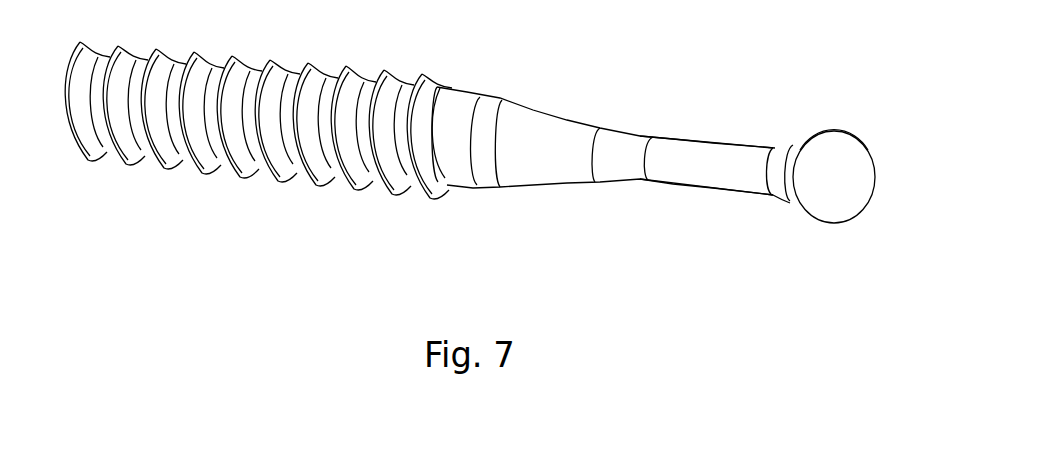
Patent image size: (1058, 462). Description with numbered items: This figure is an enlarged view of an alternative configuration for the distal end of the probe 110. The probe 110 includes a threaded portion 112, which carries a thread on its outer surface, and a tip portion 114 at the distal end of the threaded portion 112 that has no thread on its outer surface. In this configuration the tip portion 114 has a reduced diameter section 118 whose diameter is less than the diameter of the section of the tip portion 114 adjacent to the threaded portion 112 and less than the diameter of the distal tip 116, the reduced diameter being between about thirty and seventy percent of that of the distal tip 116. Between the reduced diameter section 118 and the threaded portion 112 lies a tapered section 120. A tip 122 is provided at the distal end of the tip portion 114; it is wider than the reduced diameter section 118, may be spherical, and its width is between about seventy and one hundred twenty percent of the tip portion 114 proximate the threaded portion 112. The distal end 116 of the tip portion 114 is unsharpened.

The probe 110 is at (506, 222).
The threaded portion 112 is at (203, 162).
The tip portion 114 is at (505, 100).
The distal end 116 is at (848, 193).
The reduced diameter section 118 is at (727, 168).
The tapered section 120 is at (530, 175).
The tip 122 is at (857, 148).